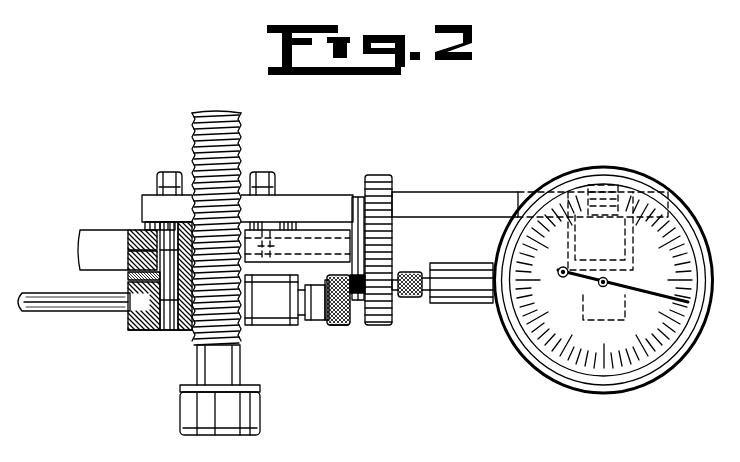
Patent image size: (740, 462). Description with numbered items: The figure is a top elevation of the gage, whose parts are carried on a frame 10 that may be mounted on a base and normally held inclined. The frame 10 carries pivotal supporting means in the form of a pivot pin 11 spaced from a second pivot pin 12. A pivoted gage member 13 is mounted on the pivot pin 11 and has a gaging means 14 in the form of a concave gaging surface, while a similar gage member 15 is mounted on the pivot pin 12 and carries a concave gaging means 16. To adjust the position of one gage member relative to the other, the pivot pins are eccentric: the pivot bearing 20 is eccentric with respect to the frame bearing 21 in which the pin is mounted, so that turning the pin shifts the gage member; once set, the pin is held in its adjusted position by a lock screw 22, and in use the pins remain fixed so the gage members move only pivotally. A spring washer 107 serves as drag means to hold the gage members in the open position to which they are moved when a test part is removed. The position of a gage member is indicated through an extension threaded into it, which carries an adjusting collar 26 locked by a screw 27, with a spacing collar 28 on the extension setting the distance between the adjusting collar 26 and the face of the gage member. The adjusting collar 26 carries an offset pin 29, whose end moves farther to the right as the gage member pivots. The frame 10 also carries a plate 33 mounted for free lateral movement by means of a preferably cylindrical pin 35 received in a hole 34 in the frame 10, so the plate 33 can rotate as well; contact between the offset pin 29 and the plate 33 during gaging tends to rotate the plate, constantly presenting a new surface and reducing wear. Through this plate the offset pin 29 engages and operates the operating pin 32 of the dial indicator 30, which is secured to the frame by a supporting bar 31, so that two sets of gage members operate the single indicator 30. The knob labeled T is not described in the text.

The frame 10 is at (80, 250).
The frame bearing 21 is at (128, 240).
The lock screw 22 is at (150, 226).
The spring washer 107 is at (128, 277).
The pivot bearing 20 is at (128, 318).
The pivoted gage member 13 is at (138, 330).
The pivot pin 11 is at (164, 330).
The gaging means 14 is at (193, 337).
The gaging means 16 is at (242, 357).
The knob T is at (180, 412).
The hole 34 is at (296, 235).
The pivot pin 12 is at (280, 328).
The gage member 15 is at (312, 324).
The spacing collar 28 is at (326, 325).
The adjusting collar 26 is at (347, 326).
The screw 27 is at (338, 327).
The offset pin 29 is at (358, 296).
The pin 35 is at (360, 214).
The plate 33 is at (380, 180).
The supporting bar 31 is at (500, 200).
The operating pin 32 is at (410, 300).
The dial indicator 30 is at (630, 172).